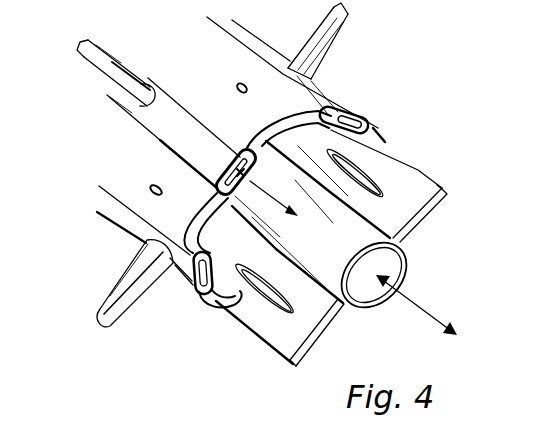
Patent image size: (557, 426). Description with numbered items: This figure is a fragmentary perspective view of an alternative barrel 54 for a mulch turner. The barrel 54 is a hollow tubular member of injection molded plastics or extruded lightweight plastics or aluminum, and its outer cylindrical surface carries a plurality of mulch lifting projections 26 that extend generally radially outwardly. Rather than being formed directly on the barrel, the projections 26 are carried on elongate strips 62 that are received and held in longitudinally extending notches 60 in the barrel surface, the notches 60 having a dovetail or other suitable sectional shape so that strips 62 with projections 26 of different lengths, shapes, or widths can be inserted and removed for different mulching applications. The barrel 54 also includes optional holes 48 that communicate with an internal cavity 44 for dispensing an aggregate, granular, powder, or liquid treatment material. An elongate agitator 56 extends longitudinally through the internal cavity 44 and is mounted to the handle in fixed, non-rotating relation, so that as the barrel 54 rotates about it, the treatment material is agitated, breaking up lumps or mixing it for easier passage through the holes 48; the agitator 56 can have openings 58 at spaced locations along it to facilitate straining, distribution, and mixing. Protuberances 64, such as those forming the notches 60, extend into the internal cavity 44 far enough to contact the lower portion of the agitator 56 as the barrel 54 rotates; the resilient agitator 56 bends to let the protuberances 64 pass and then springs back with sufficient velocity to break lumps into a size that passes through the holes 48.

The mulch lifting projections 26 is at (82, 62).
The internal cavity 44 is at (235, 312).
The holes 48 is at (240, 84).
The barrel 54 is at (386, 122).
The agitator 56 is at (428, 218).
The openings 58 is at (376, 178).
The notches 60 is at (245, 155).
The elongate strips 62 is at (167, 113).
The protuberances 64 is at (220, 262).